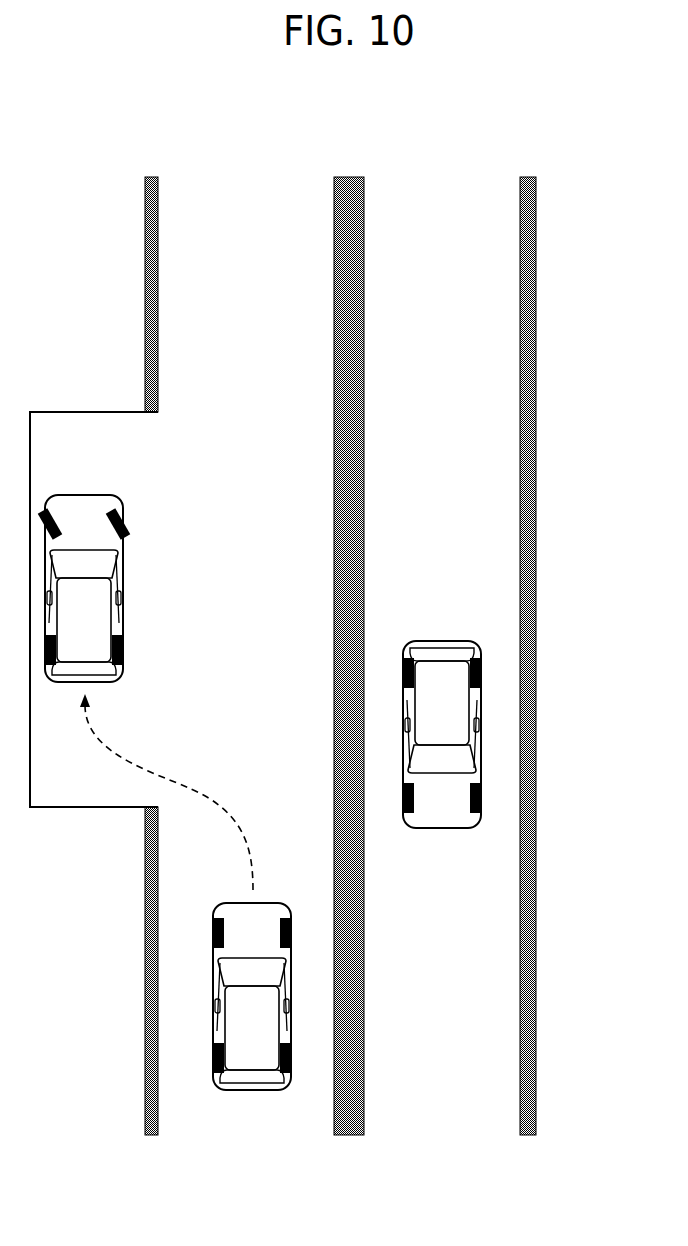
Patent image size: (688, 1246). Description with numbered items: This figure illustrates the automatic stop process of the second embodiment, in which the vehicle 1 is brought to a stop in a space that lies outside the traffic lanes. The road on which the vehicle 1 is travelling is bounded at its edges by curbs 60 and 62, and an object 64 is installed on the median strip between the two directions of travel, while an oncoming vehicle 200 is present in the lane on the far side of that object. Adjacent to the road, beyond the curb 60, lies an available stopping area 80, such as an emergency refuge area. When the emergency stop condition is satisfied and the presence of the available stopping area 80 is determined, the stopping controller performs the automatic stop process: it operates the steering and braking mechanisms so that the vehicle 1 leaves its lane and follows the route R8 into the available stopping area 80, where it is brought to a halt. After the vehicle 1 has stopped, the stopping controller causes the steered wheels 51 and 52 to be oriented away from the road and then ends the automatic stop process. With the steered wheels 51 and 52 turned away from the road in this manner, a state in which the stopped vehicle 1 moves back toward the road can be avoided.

The vehicle 1 is at (165, 768).
The steered wheel 51 is at (86, 493).
The steered wheel 52 is at (148, 504).
The curb 60 is at (145, 253).
The curb 62 is at (537, 267).
The object 64 is at (365, 260).
The available stopping area 80 is at (73, 455).
The oncoming vehicle 200 is at (449, 692).
The parking route R8 is at (166, 792).